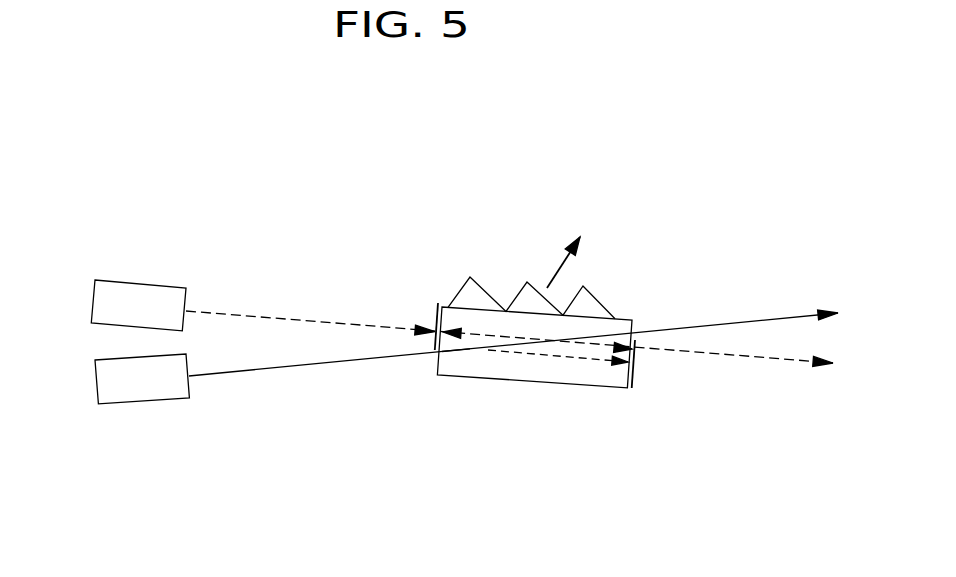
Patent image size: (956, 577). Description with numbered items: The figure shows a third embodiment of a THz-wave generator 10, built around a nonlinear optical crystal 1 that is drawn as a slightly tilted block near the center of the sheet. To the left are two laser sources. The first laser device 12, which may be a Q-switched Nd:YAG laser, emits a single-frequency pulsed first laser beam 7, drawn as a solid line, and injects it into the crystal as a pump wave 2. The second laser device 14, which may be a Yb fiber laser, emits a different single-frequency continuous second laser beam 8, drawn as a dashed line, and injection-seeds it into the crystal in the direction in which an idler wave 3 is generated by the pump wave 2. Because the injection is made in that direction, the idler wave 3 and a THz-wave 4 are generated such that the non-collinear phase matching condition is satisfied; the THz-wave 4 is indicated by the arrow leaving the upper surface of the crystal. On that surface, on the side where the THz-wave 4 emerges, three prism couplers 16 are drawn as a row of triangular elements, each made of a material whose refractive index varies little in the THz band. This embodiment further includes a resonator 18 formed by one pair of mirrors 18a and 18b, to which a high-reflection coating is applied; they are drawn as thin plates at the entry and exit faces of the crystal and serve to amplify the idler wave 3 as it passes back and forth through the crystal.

The nonlinear optical crystal 1 is at (538, 368).
The pump wave 2 is at (468, 350).
The idler wave 3 is at (597, 358).
The THz-wave 4 is at (557, 241).
The first laser beam 7 is at (285, 367).
The second laser beam 8 is at (280, 318).
The THz-wave generator 10 is at (145, 210).
The first laser device 12 is at (137, 390).
The second laser device 14 is at (142, 297).
The prism coupler 16 is at (467, 298).
The resonator 18 is at (367, 260).
The mirror 18a is at (432, 314).
The mirror 18b is at (636, 372).